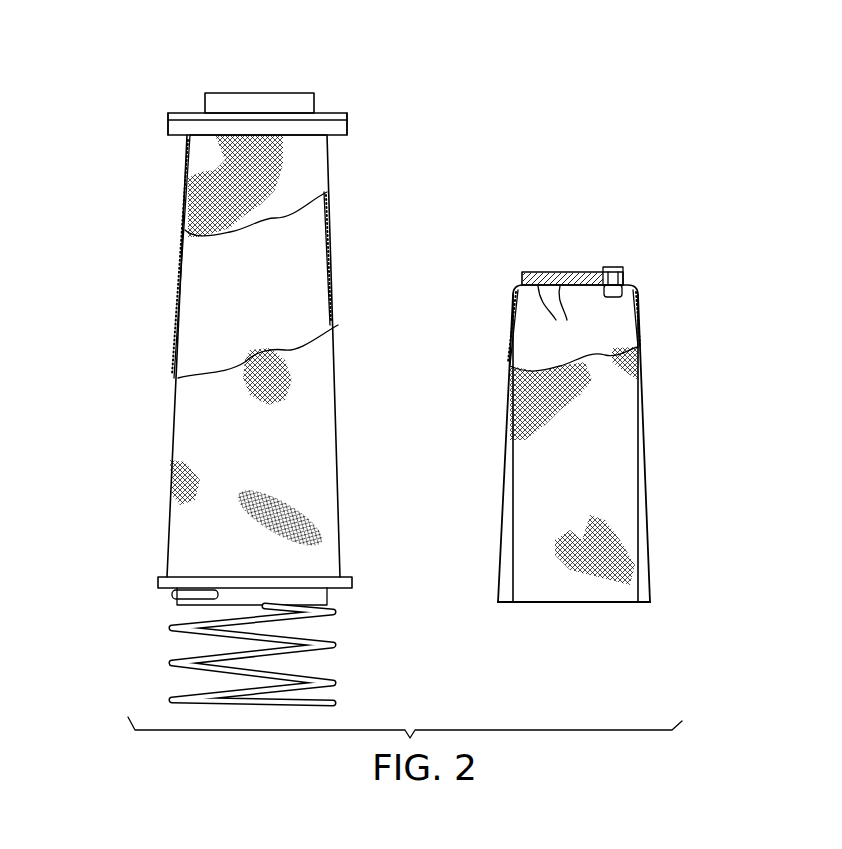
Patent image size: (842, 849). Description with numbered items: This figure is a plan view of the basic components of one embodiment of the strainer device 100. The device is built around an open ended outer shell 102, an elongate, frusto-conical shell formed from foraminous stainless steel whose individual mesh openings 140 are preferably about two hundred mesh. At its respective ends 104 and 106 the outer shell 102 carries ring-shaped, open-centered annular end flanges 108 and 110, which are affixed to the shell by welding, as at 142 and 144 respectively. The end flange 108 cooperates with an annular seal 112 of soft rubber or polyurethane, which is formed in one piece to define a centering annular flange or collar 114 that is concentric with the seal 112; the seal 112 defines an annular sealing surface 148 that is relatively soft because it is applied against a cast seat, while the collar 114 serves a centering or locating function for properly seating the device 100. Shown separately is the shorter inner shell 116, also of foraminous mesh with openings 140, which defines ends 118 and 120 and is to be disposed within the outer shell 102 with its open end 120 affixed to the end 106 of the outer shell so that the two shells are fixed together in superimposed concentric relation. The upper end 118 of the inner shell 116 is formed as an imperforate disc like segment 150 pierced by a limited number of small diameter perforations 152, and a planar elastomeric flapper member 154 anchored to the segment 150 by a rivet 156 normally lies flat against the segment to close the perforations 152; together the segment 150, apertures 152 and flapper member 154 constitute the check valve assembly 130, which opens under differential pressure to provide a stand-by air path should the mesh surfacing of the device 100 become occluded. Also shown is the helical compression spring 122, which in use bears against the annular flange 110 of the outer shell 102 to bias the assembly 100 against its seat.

The strainer device 100 is at (472, 171).
The outer shell 102 is at (330, 233).
The end of outer shell 104 is at (188, 182).
The end of outer shell 106 is at (183, 542).
The annular end flange 108 is at (170, 128).
The annular end flange 110 is at (160, 582).
The annular seal 112 is at (340, 113).
The centering annular flange 114 is at (297, 105).
The inner shell 116 is at (520, 342).
The end of inner shell 118 is at (613, 318).
The end of inner shell 120 is at (650, 580).
The helical compression spring 122 is at (163, 663).
The check valve assembly 130 is at (590, 271).
The mesh openings 140 is at (185, 231).
The weld 142 is at (328, 137).
The weld 144 is at (163, 575).
The annular sealing surface 148 is at (185, 113).
The imperforate disc like segment 150 is at (610, 302).
The perforations 152 is at (566, 317).
The flapper member 154 is at (560, 272).
The rivet 156 is at (622, 270).